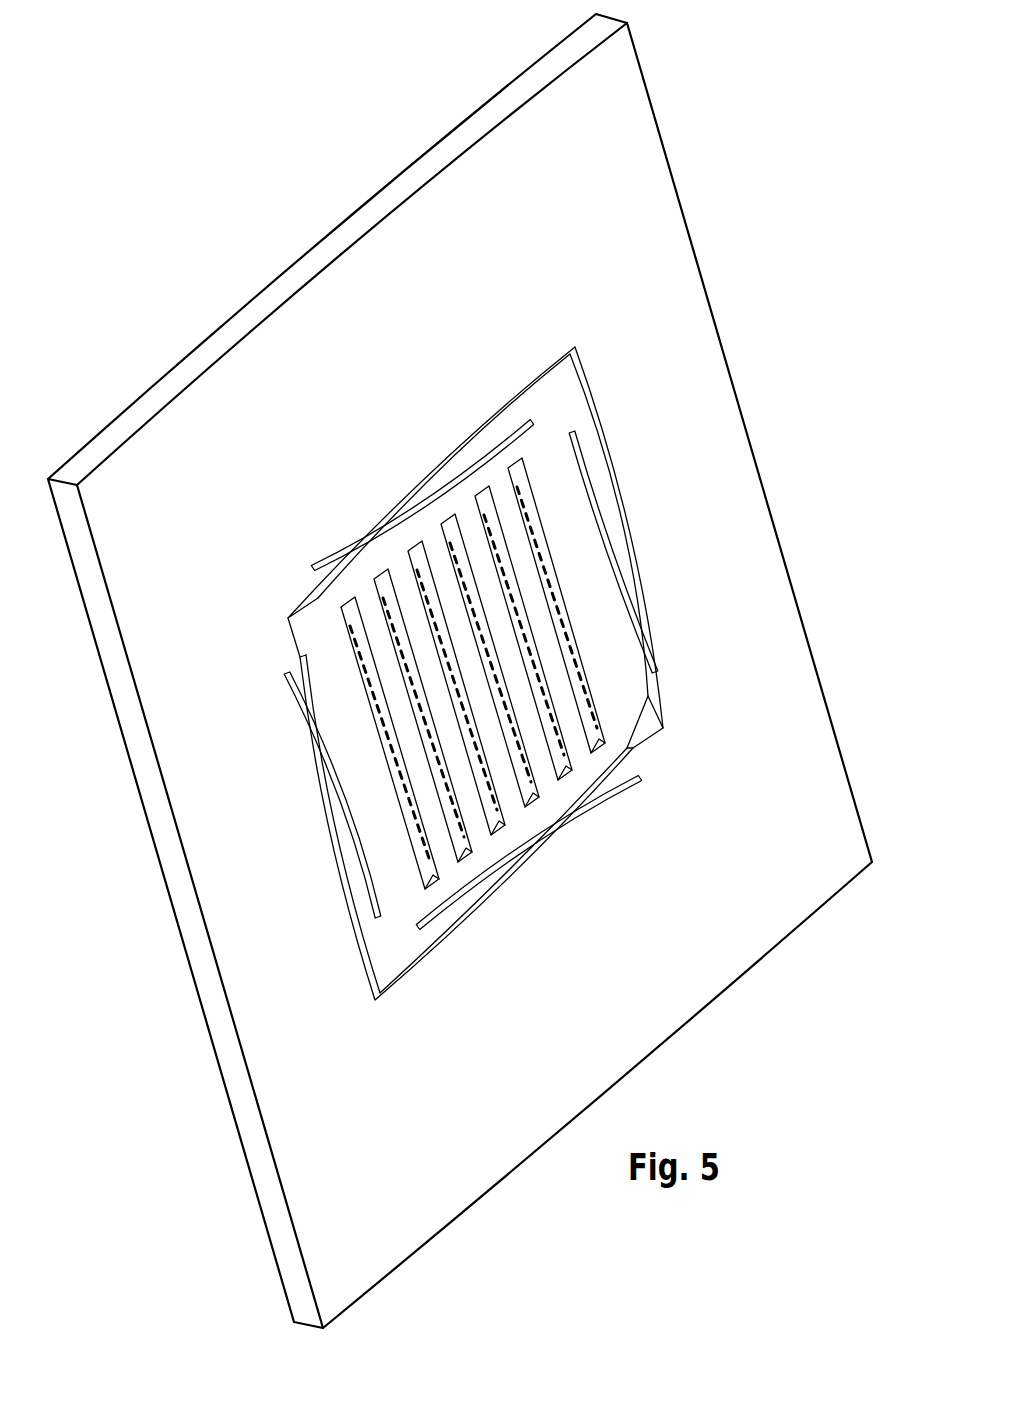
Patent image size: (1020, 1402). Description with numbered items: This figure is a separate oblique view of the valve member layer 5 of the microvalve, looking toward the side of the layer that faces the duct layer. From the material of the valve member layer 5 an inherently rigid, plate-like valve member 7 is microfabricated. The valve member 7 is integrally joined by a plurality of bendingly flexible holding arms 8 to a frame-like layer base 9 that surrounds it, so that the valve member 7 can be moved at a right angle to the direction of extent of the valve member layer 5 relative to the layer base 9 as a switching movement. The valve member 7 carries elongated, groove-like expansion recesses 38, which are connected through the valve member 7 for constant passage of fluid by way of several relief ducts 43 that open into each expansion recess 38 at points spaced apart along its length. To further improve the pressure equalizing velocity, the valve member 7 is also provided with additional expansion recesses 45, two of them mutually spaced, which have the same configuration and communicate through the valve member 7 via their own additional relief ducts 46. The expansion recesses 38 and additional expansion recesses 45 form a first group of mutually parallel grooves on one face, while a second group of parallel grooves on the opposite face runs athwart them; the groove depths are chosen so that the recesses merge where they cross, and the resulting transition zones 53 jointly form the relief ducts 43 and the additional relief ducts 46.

The valve member layer 5 is at (460, 215).
The layer base 9 is at (655, 220).
The valve member 7 is at (548, 800).
The holding arms 8 is at (418, 505).
The relief ducts 43 is at (477, 560).
The additional expansion recesses 45 is at (598, 748).
The additional relief ducts 46 is at (352, 660).
The transition zones 53 is at (518, 627).
The expansion recesses 38 is at (530, 797).